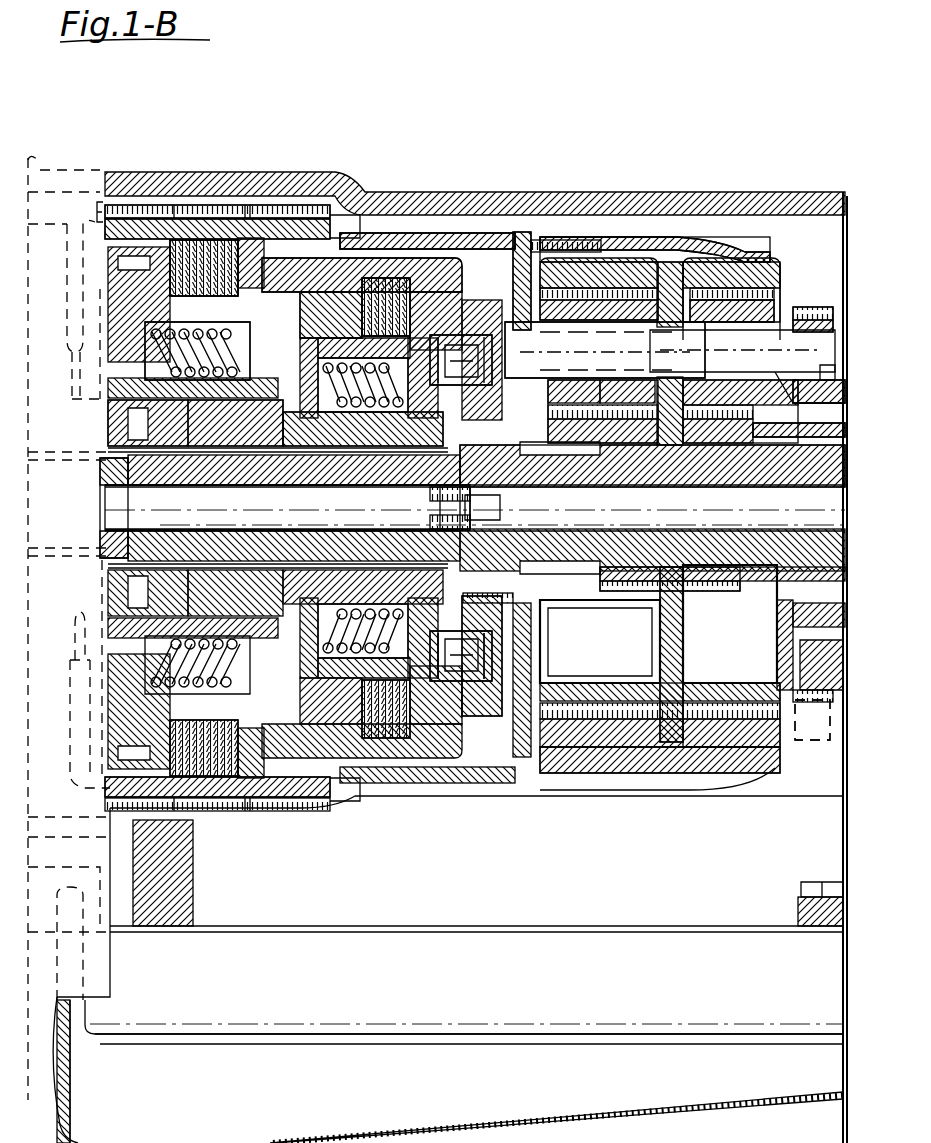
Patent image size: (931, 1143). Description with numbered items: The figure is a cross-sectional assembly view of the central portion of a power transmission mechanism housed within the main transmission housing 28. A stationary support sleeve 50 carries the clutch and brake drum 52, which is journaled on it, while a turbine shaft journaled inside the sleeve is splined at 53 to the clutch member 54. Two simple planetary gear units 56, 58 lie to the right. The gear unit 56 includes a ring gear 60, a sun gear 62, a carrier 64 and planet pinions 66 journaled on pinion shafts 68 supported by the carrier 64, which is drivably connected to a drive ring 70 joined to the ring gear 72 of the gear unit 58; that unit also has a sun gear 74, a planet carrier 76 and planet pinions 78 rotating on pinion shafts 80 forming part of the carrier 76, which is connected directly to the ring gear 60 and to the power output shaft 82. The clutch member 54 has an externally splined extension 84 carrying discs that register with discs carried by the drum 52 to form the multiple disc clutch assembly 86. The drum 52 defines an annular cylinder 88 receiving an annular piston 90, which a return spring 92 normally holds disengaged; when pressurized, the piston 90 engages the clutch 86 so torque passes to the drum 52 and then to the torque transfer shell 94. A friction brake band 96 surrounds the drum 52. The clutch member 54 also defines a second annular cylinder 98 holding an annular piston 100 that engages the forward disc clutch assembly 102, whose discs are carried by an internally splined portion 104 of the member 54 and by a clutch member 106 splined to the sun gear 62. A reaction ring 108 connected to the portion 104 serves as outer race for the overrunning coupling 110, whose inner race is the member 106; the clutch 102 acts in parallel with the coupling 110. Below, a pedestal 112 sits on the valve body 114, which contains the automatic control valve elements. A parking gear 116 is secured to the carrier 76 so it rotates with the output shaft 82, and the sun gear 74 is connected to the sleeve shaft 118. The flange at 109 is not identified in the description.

The main transmission housing 28 is at (335, 182).
The stationary support sleeve 50 is at (160, 445).
The clutch and brake drum 52 is at (225, 240).
The spline 53 is at (287, 507).
The clutch member 54 is at (272, 400).
The simple planetary gear unit 56 is at (614, 240).
The simple planetary gear unit 58 is at (708, 285).
The ring gear 60 is at (553, 262).
The sun gear 62 is at (570, 496).
The carrier 64 is at (515, 292).
The planet pinions 66 is at (610, 405).
The pinion shafts 68 is at (568, 340).
The drive ring 70 is at (630, 240).
The ring gear 72 is at (758, 290).
The sun gear 74 is at (690, 580).
The planet carrier 76 is at (678, 638).
The planet pinions 78 is at (740, 400).
The pinion shafts 80 is at (800, 330).
The power output shaft 82 is at (752, 616).
The externally splined extension 84 is at (308, 280).
The multiple disc clutch assembly 86 is at (268, 258).
The annular cylinder 88 is at (137, 200).
The annular piston 90 is at (160, 230).
The return spring 92 is at (228, 440).
The torque transfer shell 94 is at (435, 242).
The friction brake band 96 is at (290, 815).
The second annular cylinder 98 is at (310, 340).
The annular piston 100 is at (312, 430).
The forward disc clutch assembly 102 is at (430, 240).
The internally splined portion 104 is at (372, 290).
The clutch member 106 is at (495, 612).
The reaction ring 108 is at (500, 715).
The flange 109 is at (840, 396).
The overrunning coupling 110 is at (466, 682).
The pedestal 112 is at (805, 910).
The valve body 114 is at (260, 1022).
The parking gear 116 is at (818, 706).
The sleeve shaft 118 is at (845, 430).